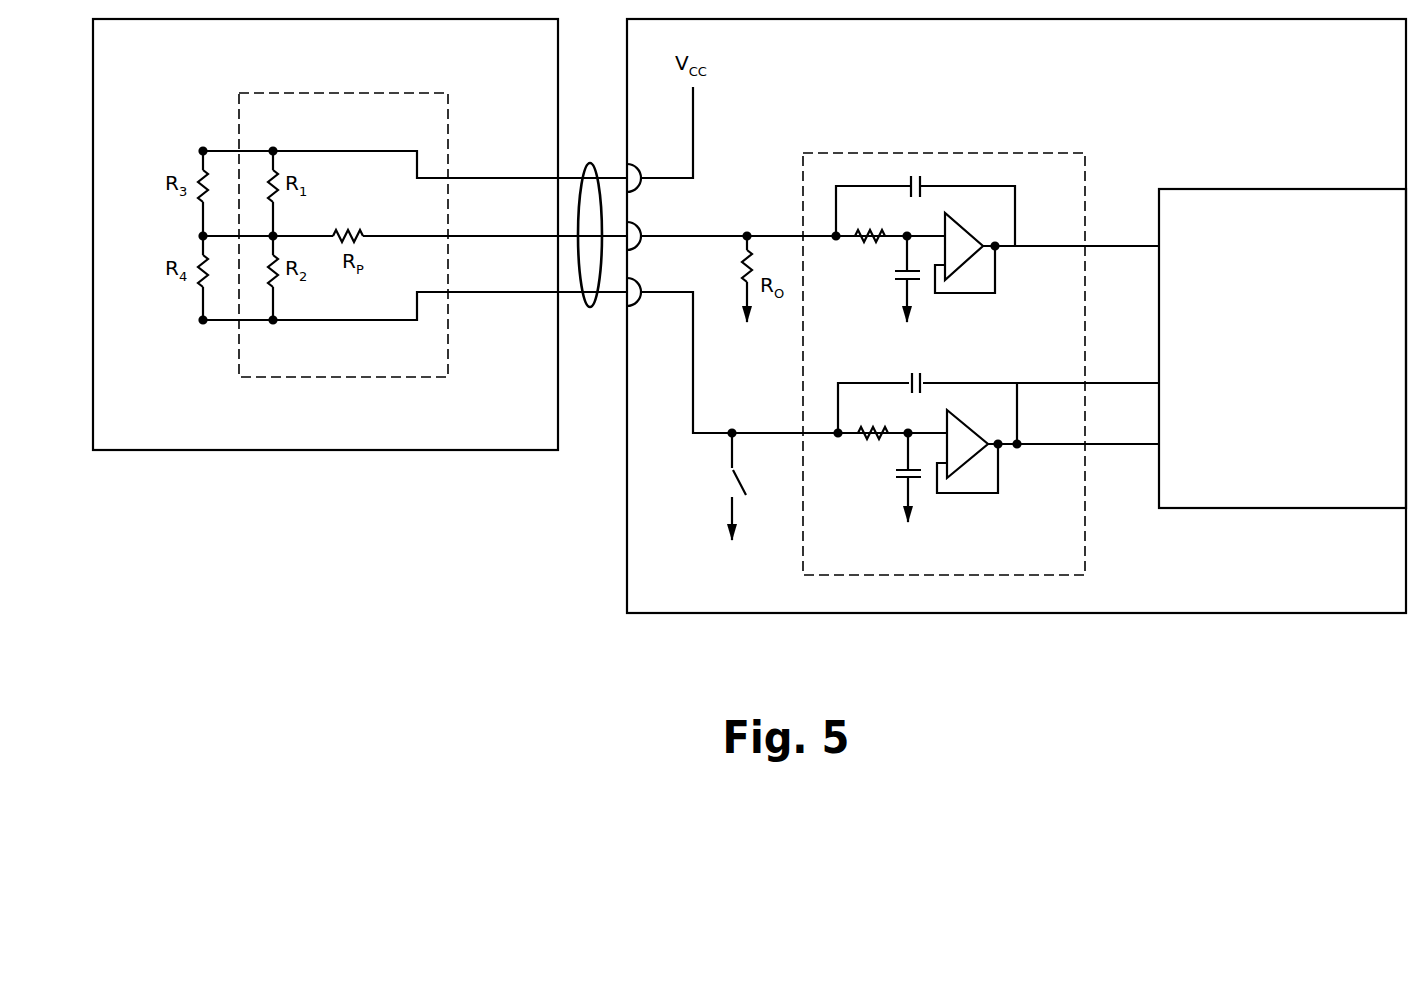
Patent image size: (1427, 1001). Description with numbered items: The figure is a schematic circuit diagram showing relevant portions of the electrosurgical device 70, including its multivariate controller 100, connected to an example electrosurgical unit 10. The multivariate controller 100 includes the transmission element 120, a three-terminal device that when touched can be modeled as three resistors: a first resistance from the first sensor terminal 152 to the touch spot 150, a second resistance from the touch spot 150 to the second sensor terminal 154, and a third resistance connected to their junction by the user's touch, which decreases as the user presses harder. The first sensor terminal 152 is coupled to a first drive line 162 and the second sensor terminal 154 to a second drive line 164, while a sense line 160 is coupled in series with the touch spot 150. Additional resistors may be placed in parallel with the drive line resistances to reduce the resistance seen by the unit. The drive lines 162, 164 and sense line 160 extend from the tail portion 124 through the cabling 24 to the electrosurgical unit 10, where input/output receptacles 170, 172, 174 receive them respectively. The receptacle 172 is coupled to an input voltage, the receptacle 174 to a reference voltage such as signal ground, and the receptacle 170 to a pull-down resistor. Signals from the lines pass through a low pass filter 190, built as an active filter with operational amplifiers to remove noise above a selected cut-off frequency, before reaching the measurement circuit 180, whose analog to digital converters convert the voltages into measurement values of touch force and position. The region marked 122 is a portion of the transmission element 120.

The electrosurgical unit 10 is at (660, 642).
The cabling 24 is at (594, 336).
The electrosurgical device 70 is at (250, 528).
The multivariate controller 100 is at (330, 452).
The transmission element 120 is at (370, 86).
The first portion of compensation circuit 122 is at (355, 132).
The tail portion 124 is at (414, 342).
The touch spot 150 is at (287, 233).
The first sensor terminal 152 is at (273, 147).
The second sensor terminal 154 is at (272, 324).
The sense line 160 is at (509, 238).
The first drive line 162 is at (509, 176).
The second drive line 164 is at (508, 294).
The input/output receptacle 170 is at (641, 224).
The input/output receptacle 172 is at (641, 164).
The input/output receptacle 174 is at (641, 280).
The measurement circuit 180 is at (1284, 510).
The low pass filter 190 is at (1086, 172).